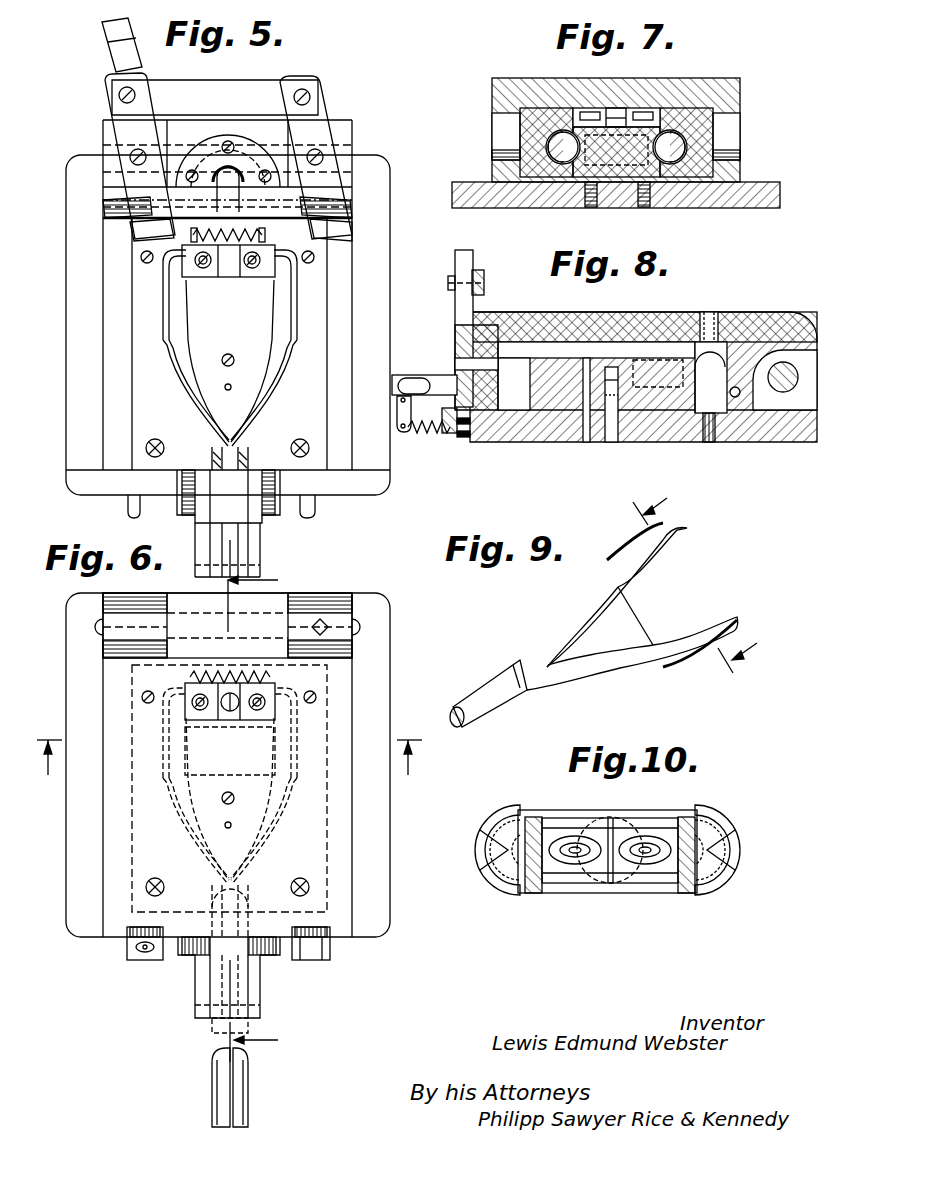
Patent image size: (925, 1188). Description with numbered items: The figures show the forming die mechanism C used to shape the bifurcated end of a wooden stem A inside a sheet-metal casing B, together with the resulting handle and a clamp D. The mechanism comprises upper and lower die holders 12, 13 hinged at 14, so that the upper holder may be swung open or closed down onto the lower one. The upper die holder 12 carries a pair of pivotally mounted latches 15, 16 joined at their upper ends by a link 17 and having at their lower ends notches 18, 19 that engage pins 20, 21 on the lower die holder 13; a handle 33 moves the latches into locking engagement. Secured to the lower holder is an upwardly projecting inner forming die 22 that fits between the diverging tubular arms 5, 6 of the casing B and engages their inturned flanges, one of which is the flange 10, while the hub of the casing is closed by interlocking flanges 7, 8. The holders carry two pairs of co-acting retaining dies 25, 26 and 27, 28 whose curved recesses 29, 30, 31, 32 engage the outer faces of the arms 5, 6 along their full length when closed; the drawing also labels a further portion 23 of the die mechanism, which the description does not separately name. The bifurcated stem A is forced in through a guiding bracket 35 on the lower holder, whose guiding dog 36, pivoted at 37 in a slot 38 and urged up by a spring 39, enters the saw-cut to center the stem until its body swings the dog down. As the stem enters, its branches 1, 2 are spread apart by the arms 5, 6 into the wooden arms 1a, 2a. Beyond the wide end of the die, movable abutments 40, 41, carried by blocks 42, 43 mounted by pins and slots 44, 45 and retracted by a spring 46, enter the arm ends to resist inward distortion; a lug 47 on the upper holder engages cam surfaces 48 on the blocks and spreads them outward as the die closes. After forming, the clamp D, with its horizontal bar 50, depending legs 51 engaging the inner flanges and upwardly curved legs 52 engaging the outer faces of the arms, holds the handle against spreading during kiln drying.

In FIG. 6, the arm-forming branch 1 is at (223, 1098).
In FIG. 6, the arm-forming branch 2 is at (240, 1090).
In FIG. 10, the wooden arm 1a is at (738, 832).
In FIG. 10, the wooden arm 2a is at (513, 827).
In FIG. 5, the tubular arm 5 is at (213, 417).
In FIG. 9, the tubular arm 5 is at (590, 615).
In FIG. 5, the tubular arm 6 is at (253, 385).
In FIG. 9, the tubular arm 6 is at (597, 667).
In FIG. 6, the interlocking flange 7 is at (229, 771).
In FIG. 6, the interlocking flange 8 is at (265, 817).
In FIG. 9, the inturned flange 10 is at (708, 578).
In FIG. 6, the upper die holder 12 is at (335, 688).
In FIG. 7, the upper die holder 12 is at (540, 86).
In FIG. 8, the upper die holder 12 is at (675, 327).
In FIG. 5, the lower die holder 13 is at (363, 268).
In FIG. 6, the lower die holder 13 is at (370, 717).
In FIG. 7, the lower die holder 13 is at (710, 194).
In FIG. 8, the lower die holder 13 is at (660, 420).
In FIG. 5, the hinge 14 is at (357, 180).
In FIG. 6, the hinge 14 is at (355, 627).
In FIG. 8, the hinge 14 is at (788, 383).
In FIG. 5, the latch 15 is at (145, 142).
In FIG. 6, the latch 15 is at (130, 950).
In FIG. 8, the latch 15 is at (463, 257).
In FIG. 5, the latch 16 is at (307, 138).
In FIG. 6, the latch 16 is at (330, 950).
In FIG. 5, the link 17 is at (247, 98).
In FIG. 8, the link 17 is at (483, 280).
In FIG. 5, the notch 18 is at (102, 295).
In FIG. 5, the notch 19 is at (387, 295).
In FIG. 5, the pin 20 is at (127, 508).
In FIG. 5, the pin 21 is at (312, 510).
In FIG. 5, the inner forming die 22 is at (223, 377).
In FIG. 8, the inner forming die 22 is at (565, 378).
In FIG. 5, the recess 23 is at (378, 344).
In FIG. 7, the retaining die 25 is at (532, 120).
In FIG. 7, the retaining die 26 is at (720, 104).
In FIG. 5, the retaining die 27 is at (150, 434).
In FIG. 7, the retaining die 27 is at (485, 144).
In FIG. 5, the retaining die 28 is at (307, 453).
In FIG. 7, the retaining die 28 is at (702, 163).
In FIG. 7, the curved recess 29 is at (555, 117).
In FIG. 7, the curved recess 30 is at (678, 110).
In FIG. 5, the curved recess 31 is at (173, 350).
In FIG. 7, the curved recess 31 is at (560, 158).
In FIG. 5, the curved recess 32 is at (287, 350).
In FIG. 7, the curved recess 32 is at (675, 160).
In FIG. 5, the handle 33 is at (113, 40).
In FIG. 6, the guiding bracket 35 is at (253, 982).
In FIG. 8, the guiding bracket 35 is at (438, 383).
In FIG. 6, the guiding dog 36 is at (230, 995).
In FIG. 8, the guiding dog 36 is at (423, 383).
In FIG. 6, the pivot 37 is at (193, 1017).
In FIG. 8, the pivot 37 is at (400, 402).
In FIG. 6, the slot 38 is at (230, 982).
In FIG. 8, the slot 38 is at (428, 404).
In FIG. 8, the spring 39 is at (452, 437).
In FIG. 5, the movable abutment 40 is at (190, 272).
In FIG. 6, the movable abutment 40 is at (183, 703).
In FIG. 5, the movable abutment 41 is at (258, 272).
In FIG. 6, the movable abutment 41 is at (280, 710).
In FIG. 5, the block 42 is at (192, 257).
In FIG. 5, the block 43 is at (263, 268).
In FIG. 5, the pin and slot 44 is at (217, 277).
In FIG. 5, the pin and slot 45 is at (233, 280).
In FIG. 5, the spring 46 is at (129, 261).
In FIG. 5, the lug 47 is at (230, 182).
In FIG. 7, the lug 47 is at (625, 118).
In FIG. 8, the lug 47 is at (707, 357).
In FIG. 7, the cam surface 48 is at (588, 110).
In FIG. 9, the horizontal bar 50 is at (683, 627).
In FIG. 10, the horizontal bar 50 is at (587, 816).
In FIG. 10, the depending leg 51 is at (532, 858).
In FIG. 9, the curved leg 52 is at (637, 549).
In FIG. 10, the curved leg 52 is at (483, 872).
In FIG. 9, the stem A is at (480, 698).
In FIG. 5, the casing B is at (236, 436).
In FIG. 5, the forming die mechanism C is at (373, 193).
In FIG. 7, the forming die mechanism C is at (723, 140).
In FIG. 8, the forming die mechanism C is at (673, 328).
In FIG. 5, the clamp D is at (310, 331).
In FIG. 6, the clamp D is at (248, 762).
In FIG. 7, the clamp D is at (617, 118).
In FIG. 8, the clamp D is at (657, 357).
In FIG. 9, the clamp D is at (663, 598).
In FIG. 10, the clamp D is at (653, 817).